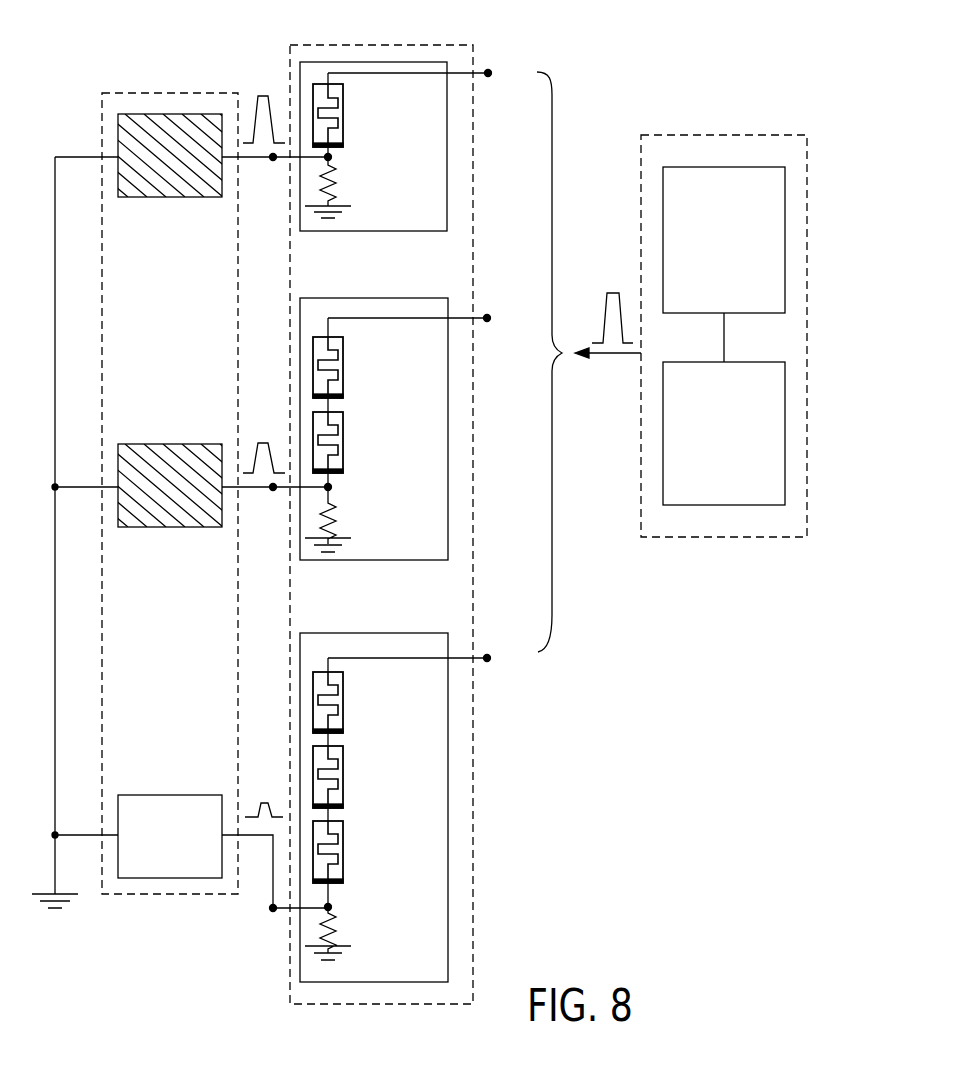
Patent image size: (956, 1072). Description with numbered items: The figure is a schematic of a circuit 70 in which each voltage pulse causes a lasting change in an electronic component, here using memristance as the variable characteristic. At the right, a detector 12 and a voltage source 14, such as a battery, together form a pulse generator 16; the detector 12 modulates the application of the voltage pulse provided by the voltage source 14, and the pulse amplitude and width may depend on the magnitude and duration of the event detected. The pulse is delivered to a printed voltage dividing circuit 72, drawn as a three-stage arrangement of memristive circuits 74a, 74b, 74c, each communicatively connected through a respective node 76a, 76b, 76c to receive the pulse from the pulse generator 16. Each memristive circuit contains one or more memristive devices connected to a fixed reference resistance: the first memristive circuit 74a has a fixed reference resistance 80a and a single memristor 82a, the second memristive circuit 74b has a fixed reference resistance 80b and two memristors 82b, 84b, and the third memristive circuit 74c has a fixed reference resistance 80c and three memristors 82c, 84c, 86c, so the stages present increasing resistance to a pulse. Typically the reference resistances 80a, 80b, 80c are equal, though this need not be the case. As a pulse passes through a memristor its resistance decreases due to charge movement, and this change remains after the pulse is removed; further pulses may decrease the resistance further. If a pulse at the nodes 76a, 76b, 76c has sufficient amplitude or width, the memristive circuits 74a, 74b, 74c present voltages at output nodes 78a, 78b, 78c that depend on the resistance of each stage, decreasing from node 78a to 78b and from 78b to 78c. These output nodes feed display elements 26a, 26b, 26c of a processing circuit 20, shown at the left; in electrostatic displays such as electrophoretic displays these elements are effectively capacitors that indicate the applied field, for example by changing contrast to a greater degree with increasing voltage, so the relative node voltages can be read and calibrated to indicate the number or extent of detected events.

The circuit 70 is at (87, 68).
The processing circuit 20 is at (170, 90).
The printed voltage dividing circuit 72 is at (370, 44).
The display element 26a is at (175, 197).
The display element 26b is at (175, 527).
The display element 26c is at (175, 878).
The output node 78a is at (273, 163).
The output node 78b is at (273, 493).
The output node 78c is at (273, 914).
The memristive circuit 74a is at (372, 231).
The memristive circuit 74b is at (375, 560).
The memristive circuit 74c is at (375, 982).
The node 76a is at (491, 73).
The node 76b is at (490, 318).
The node 76c is at (490, 658).
The memristor 82a is at (343, 117).
The memristor 82b is at (343, 437).
The memristor 82c is at (343, 848).
The memristor 84b is at (343, 362).
The memristor 84c is at (343, 773).
The memristor 86c is at (343, 698).
The fixed reference resistance 80a is at (336, 185).
The fixed reference resistance 80b is at (336, 520).
The fixed reference resistance 80c is at (336, 930).
The detector 12 is at (736, 252).
The voltage source 14 is at (736, 442).
The pulse generator 16 is at (725, 542).